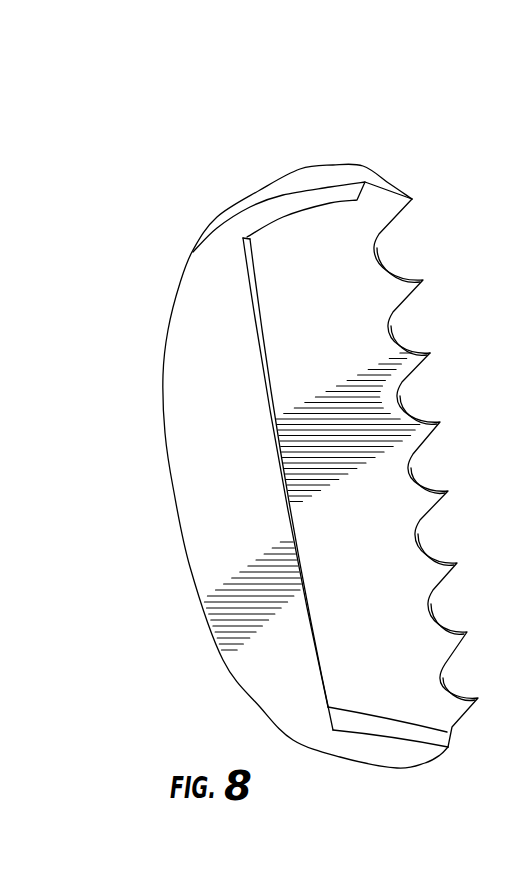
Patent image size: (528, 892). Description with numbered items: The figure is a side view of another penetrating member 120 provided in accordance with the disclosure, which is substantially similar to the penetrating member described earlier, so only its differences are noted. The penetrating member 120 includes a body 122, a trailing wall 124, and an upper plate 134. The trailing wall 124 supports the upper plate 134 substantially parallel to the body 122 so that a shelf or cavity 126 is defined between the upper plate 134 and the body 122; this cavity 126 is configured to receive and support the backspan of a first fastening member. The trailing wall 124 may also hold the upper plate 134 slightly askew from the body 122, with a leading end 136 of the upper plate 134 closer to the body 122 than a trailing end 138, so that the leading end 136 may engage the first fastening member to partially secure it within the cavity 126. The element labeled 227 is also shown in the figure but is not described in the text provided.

The penetrating member 120 is at (303, 419).
The body 122 is at (383, 520).
The trailing wall 124 is at (277, 213).
The cavity 126 is at (325, 661).
The upper plate 134 is at (216, 452).
The leading end 136 is at (270, 398).
The trailing end 138 is at (190, 544).
The tooth 227 is at (400, 289).